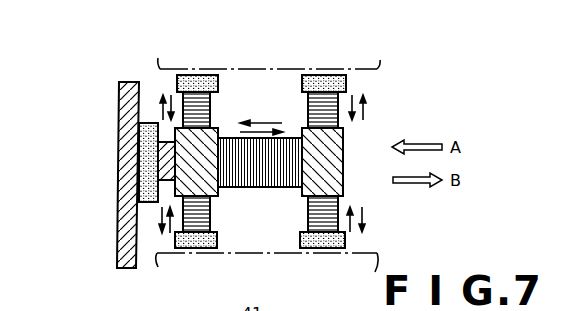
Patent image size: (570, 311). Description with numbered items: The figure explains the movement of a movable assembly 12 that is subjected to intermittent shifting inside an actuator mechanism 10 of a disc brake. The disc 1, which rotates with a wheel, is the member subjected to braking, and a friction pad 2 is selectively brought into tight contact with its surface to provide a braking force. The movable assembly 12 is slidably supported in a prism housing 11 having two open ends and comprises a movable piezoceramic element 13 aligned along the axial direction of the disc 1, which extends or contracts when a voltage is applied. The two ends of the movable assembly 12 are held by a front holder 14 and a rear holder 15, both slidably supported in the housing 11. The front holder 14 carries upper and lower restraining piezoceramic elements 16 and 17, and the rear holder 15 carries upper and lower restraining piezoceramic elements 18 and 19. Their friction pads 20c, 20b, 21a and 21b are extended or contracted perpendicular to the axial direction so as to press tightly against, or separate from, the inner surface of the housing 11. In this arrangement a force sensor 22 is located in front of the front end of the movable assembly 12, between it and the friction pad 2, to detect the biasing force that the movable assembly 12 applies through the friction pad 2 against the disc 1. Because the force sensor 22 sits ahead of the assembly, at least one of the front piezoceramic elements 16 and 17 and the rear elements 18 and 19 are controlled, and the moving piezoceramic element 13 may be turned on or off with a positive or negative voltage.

The disc 1 is at (127, 110).
The friction pad 2 is at (140, 188).
The actuator mechanism 10 is at (362, 57).
The prism housing 11 is at (277, 69).
The movable assembly 12 is at (252, 84).
The movable piezoceramic element 13 is at (262, 188).
The front holder 14 is at (218, 193).
The rear holder 15 is at (340, 165).
The upper restraining piezoceramic element 16 is at (211, 104).
The lower restraining piezoceramic element 17 is at (210, 217).
The upper restraining piezoceramic element 18 is at (310, 110).
The lower restraining piezoceramic element 19 is at (307, 213).
The friction pad 20b is at (192, 248).
The electrode cap 20c is at (192, 77).
The friction pad 21a is at (327, 82).
The friction pad 21b is at (315, 248).
The force sensor 22 is at (160, 152).